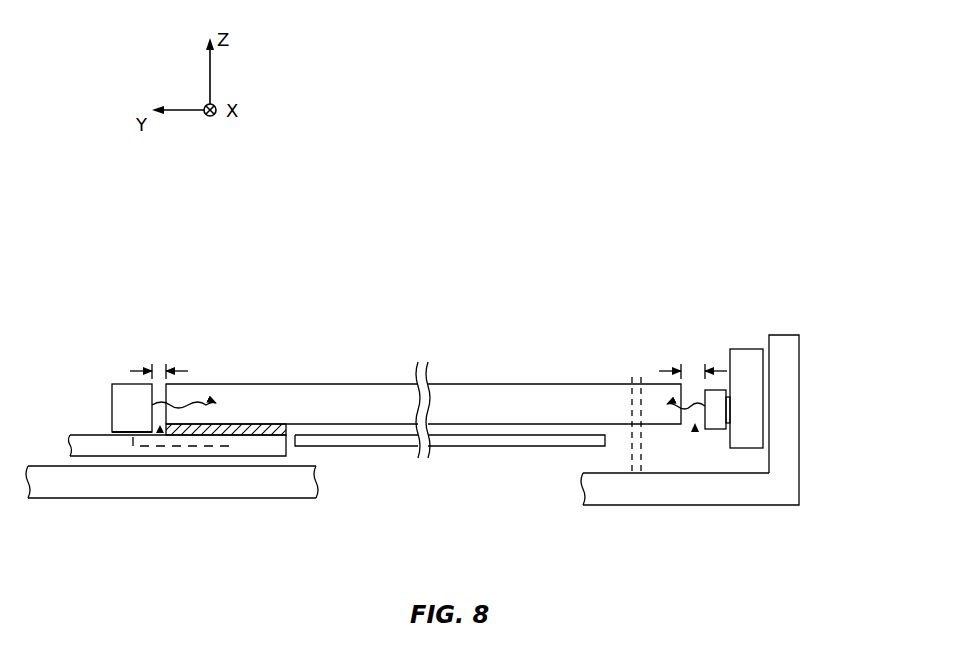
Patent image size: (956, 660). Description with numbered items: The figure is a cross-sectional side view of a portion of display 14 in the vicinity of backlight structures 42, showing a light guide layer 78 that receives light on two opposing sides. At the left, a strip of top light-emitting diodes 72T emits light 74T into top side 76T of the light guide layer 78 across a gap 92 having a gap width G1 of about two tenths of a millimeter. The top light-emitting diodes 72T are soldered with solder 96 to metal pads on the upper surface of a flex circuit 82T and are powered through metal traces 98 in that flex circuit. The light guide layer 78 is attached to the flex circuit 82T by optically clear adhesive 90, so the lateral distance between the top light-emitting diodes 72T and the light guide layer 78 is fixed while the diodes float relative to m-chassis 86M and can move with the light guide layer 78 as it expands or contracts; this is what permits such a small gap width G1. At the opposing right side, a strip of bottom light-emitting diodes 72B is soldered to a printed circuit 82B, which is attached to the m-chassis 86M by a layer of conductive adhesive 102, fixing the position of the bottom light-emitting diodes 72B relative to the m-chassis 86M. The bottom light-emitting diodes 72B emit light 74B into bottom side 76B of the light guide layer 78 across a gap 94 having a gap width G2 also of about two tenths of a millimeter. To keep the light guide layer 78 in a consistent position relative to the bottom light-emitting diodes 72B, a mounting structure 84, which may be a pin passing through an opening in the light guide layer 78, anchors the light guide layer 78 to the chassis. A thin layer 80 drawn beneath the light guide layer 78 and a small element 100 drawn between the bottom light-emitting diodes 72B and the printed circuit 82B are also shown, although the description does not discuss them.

The display 14 is at (588, 226).
The backlight structures 42 is at (188, 288).
The top light-emitting diodes 72T is at (123, 390).
The bottom light-emitting diodes 72B is at (715, 426).
The light 74T is at (196, 402).
The light 74B is at (676, 402).
The top side of light guide layer 76T is at (218, 423).
The bottom side of light guide layer 76B is at (686, 423).
The light guide layer 78 is at (287, 390).
The display layer 80 is at (500, 440).
The flex circuit 82T is at (90, 450).
The printed circuit 82B is at (742, 440).
The mounting structure 84 is at (635, 467).
The m-chassis 86M is at (79, 489).
The optically clear adhesive 90 is at (248, 428).
The gap 92 is at (160, 433).
The gap 94 is at (695, 432).
The solder 96 is at (110, 432).
The metal traces 98 is at (207, 448).
The adhesive 100 is at (729, 398).
The conductive adhesive 102 is at (765, 421).
The gap width G1 is at (159, 360).
The gap width G2 is at (693, 361).